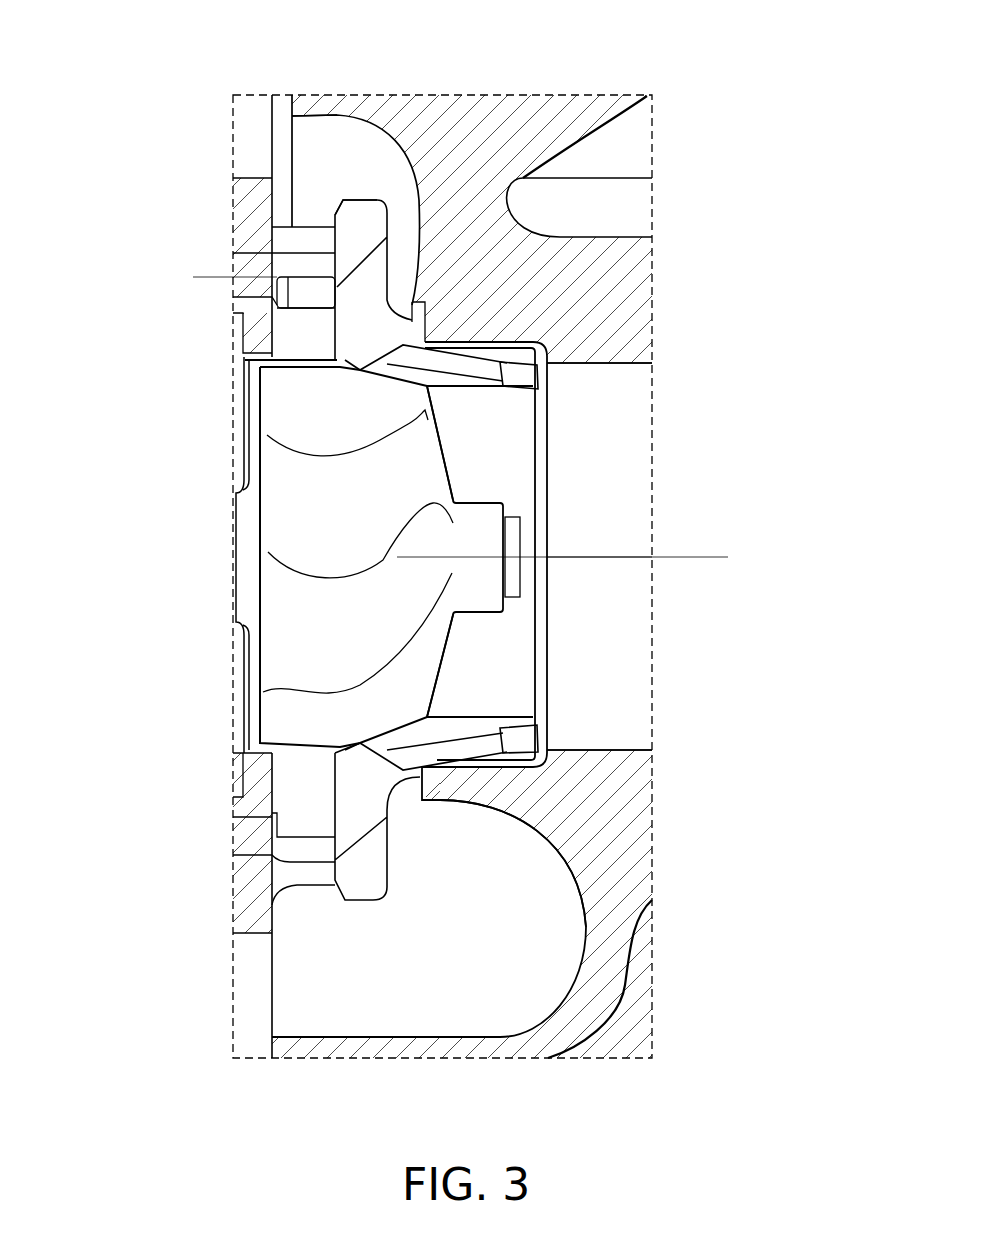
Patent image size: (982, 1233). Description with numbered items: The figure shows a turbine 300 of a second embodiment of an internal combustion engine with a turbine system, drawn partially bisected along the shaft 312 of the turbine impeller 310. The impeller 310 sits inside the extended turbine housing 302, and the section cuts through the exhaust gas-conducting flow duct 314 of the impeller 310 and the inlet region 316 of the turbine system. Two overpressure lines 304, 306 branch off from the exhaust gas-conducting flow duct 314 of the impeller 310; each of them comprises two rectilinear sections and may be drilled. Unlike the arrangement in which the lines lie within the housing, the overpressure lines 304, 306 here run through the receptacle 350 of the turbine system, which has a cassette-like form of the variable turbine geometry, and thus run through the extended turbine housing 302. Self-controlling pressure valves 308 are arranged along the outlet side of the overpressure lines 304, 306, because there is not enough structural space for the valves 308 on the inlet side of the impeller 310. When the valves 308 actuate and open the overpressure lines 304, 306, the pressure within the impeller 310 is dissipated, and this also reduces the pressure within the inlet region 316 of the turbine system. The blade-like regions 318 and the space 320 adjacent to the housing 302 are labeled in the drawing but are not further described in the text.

The turbine 300 is at (118, 217).
The extended turbine housing 302 is at (575, 125).
The overpressure line 304 is at (463, 343).
The overpressure line 306 is at (445, 772).
The self-controlling pressure valve 308 is at (535, 383).
The turbine impeller 310 is at (317, 504).
The shaft 312 is at (487, 547).
The exhaust gas-conducting flow duct 314 is at (307, 149).
The inlet region 316 is at (307, 188).
The blade 318 is at (465, 456).
The gap 320 is at (582, 638).
The receptacle 350 is at (362, 850).